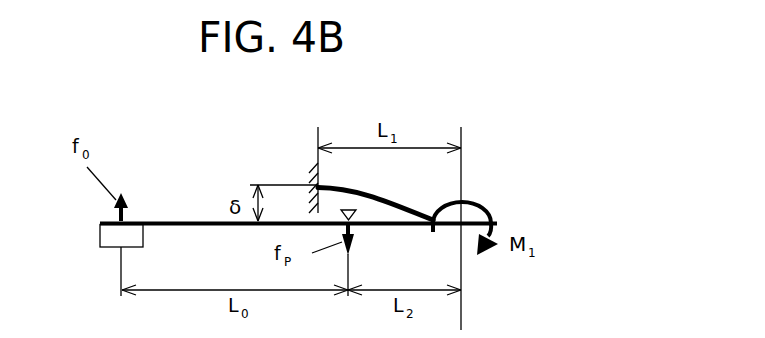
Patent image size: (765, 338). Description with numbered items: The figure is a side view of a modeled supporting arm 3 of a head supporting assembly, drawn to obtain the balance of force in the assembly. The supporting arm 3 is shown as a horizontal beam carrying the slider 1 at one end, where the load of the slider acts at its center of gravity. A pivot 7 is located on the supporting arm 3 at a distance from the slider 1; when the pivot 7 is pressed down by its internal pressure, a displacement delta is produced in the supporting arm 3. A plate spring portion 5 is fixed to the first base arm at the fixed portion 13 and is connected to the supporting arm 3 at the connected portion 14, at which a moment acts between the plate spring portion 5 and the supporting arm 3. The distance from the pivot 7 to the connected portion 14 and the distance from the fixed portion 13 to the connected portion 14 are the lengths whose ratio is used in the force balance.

The slider 1 is at (113, 233).
The supporting arm 3 is at (192, 221).
The plate spring portion 5 is at (412, 210).
The pivot 7 is at (356, 224).
The fixed portion 13 is at (317, 170).
The connected portion 14 is at (463, 222).